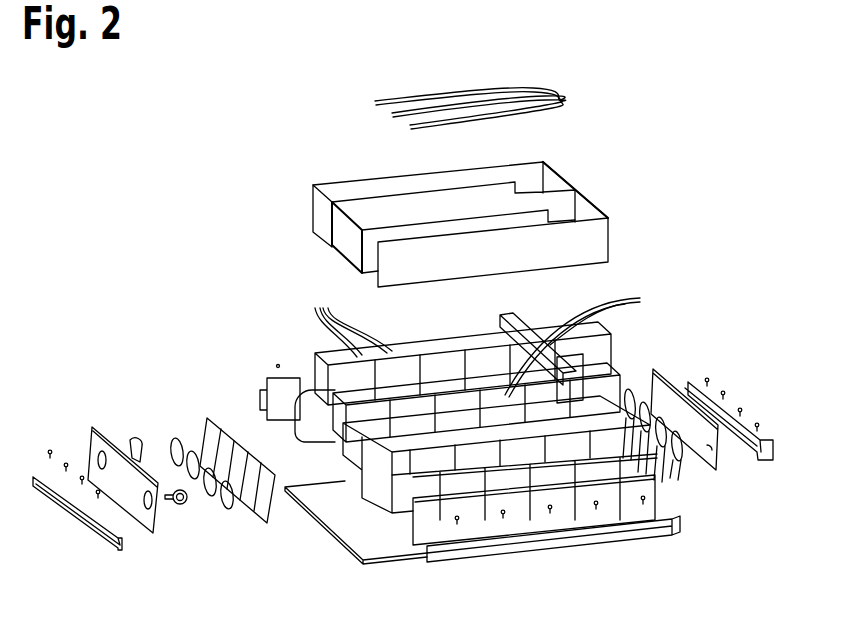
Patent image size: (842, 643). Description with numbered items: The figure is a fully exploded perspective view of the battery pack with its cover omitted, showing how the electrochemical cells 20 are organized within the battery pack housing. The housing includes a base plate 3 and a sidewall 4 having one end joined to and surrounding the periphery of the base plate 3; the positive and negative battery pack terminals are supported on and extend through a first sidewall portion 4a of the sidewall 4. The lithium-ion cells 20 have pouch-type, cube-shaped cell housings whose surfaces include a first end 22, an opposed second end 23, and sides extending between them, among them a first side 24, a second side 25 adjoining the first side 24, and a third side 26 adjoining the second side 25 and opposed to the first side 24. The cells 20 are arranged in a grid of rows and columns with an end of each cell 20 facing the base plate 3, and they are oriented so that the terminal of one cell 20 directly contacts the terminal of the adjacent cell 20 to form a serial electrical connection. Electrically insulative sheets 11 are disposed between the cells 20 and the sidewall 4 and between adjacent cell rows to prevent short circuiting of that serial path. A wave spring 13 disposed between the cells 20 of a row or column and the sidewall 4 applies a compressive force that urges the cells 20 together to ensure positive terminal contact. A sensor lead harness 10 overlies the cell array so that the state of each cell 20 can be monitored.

The base plate 3 is at (362, 531).
The sidewall 4 is at (268, 380).
The first sidewall portion 4a is at (92, 440).
The sensor lead harness 10 is at (562, 99).
The electrically insulative sheets 11 is at (567, 172).
The wave spring 13 is at (178, 425).
The electrochemical cells 20 is at (482, 339).
The first end 22 is at (582, 352).
The second end 23 is at (578, 412).
The first side 24 is at (540, 398).
The second side 25 is at (582, 420).
The third side 26 is at (607, 380).